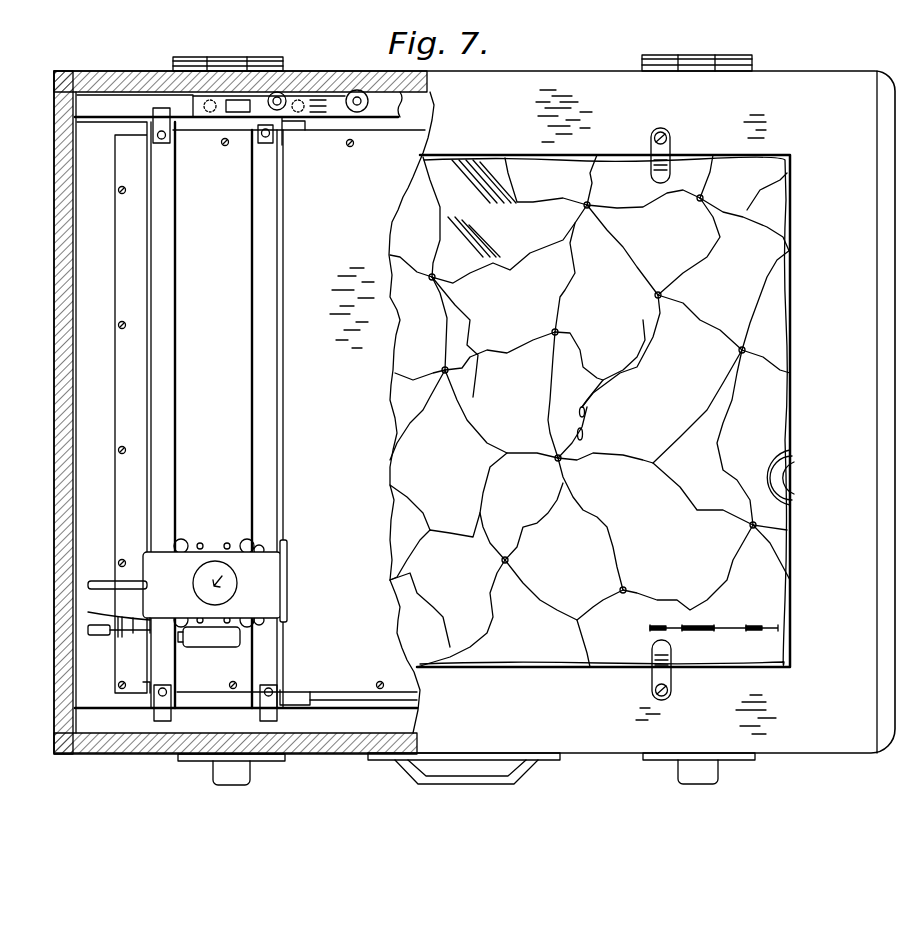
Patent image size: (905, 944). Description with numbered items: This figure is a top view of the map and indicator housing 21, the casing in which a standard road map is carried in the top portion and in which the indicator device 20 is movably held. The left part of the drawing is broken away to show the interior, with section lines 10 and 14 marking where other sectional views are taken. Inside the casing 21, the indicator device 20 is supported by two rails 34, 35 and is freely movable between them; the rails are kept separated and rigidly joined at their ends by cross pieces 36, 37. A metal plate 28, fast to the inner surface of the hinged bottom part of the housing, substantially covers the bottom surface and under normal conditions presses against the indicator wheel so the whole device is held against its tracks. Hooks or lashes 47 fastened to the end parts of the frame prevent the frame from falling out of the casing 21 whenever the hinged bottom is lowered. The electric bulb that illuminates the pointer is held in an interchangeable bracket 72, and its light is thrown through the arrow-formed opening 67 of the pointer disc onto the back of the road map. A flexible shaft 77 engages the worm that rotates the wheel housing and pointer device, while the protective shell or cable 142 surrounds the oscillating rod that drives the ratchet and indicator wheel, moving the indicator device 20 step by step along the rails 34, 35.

The section line 10- 10 is at (100, 70).
The section line 14- 14 is at (52, 95).
The map and indicator housing 21 is at (817, 62).
The cross piece 37 is at (206, 119).
The metal plate 28 is at (118, 422).
The rail 35 is at (175, 403).
The rail 34 is at (277, 412).
The indicator device 20 is at (219, 536).
The protective shell or cable 142 is at (104, 581).
The arrow-formed opening 67 is at (213, 585).
The interchangeable bracket 72 is at (287, 580).
The flexible shaft 77 is at (110, 635).
The hooks or lashes 47 is at (276, 688).
The cross piece 36 is at (327, 705).